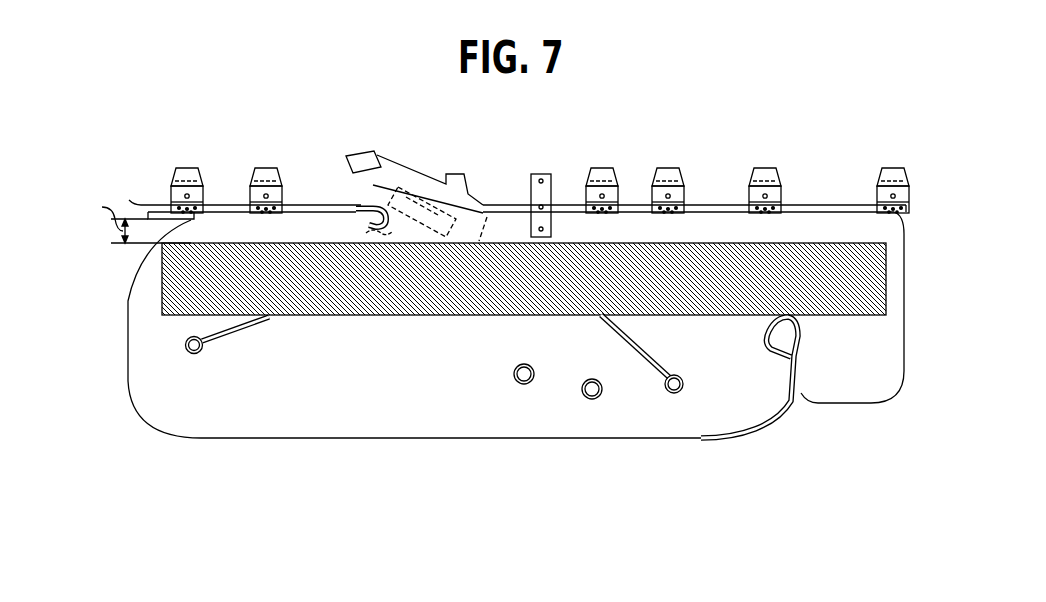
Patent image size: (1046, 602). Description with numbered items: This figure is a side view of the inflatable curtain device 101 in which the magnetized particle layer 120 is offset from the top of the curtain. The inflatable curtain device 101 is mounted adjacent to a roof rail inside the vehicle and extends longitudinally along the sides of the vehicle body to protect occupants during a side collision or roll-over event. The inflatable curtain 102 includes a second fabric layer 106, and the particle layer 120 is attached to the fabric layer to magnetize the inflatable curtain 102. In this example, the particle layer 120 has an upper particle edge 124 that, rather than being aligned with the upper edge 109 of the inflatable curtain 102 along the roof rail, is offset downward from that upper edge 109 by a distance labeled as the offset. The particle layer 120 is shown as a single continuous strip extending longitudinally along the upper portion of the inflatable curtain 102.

The inflatable curtain device 101 is at (748, 138).
The inflatable curtain 102 is at (350, 428).
The second fabric layer 106 is at (743, 388).
The upper edge 109 is at (323, 208).
The particle layer 120 is at (884, 256).
The upper particle edge 124 is at (180, 250).